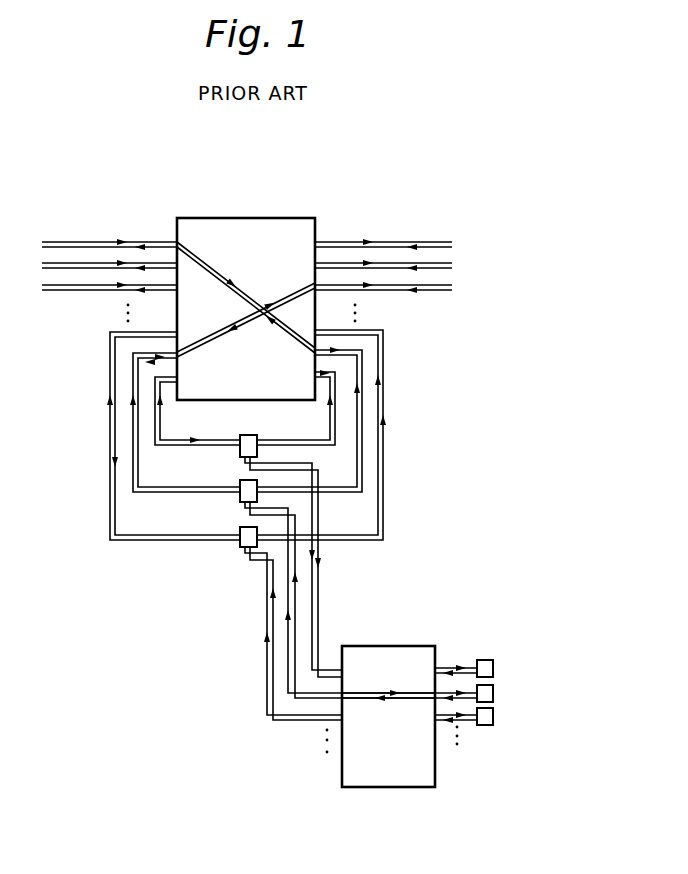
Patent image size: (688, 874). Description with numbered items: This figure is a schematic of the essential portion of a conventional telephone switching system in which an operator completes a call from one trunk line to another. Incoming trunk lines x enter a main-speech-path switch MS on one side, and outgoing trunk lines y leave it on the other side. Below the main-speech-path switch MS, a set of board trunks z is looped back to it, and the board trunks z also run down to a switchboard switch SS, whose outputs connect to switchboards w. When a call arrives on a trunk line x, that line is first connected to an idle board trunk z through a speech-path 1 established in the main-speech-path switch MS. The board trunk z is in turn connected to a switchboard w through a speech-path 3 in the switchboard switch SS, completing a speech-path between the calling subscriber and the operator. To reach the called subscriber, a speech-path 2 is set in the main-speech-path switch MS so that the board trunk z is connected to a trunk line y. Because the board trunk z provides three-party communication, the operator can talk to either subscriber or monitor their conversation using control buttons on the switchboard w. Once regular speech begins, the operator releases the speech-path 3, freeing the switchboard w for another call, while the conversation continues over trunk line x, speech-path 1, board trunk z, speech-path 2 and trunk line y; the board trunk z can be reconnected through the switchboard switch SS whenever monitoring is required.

The speech-path 1 is at (213, 271).
The speech-path 2 is at (199, 343).
The speech-path 3 is at (360, 694).
The main-speech-path switch MS is at (231, 218).
The switchboard switch SS is at (375, 787).
The trunk line x is at (76, 247).
The trunk line y is at (425, 289).
The board trunk z is at (233, 504).
The switchboard w is at (494, 688).